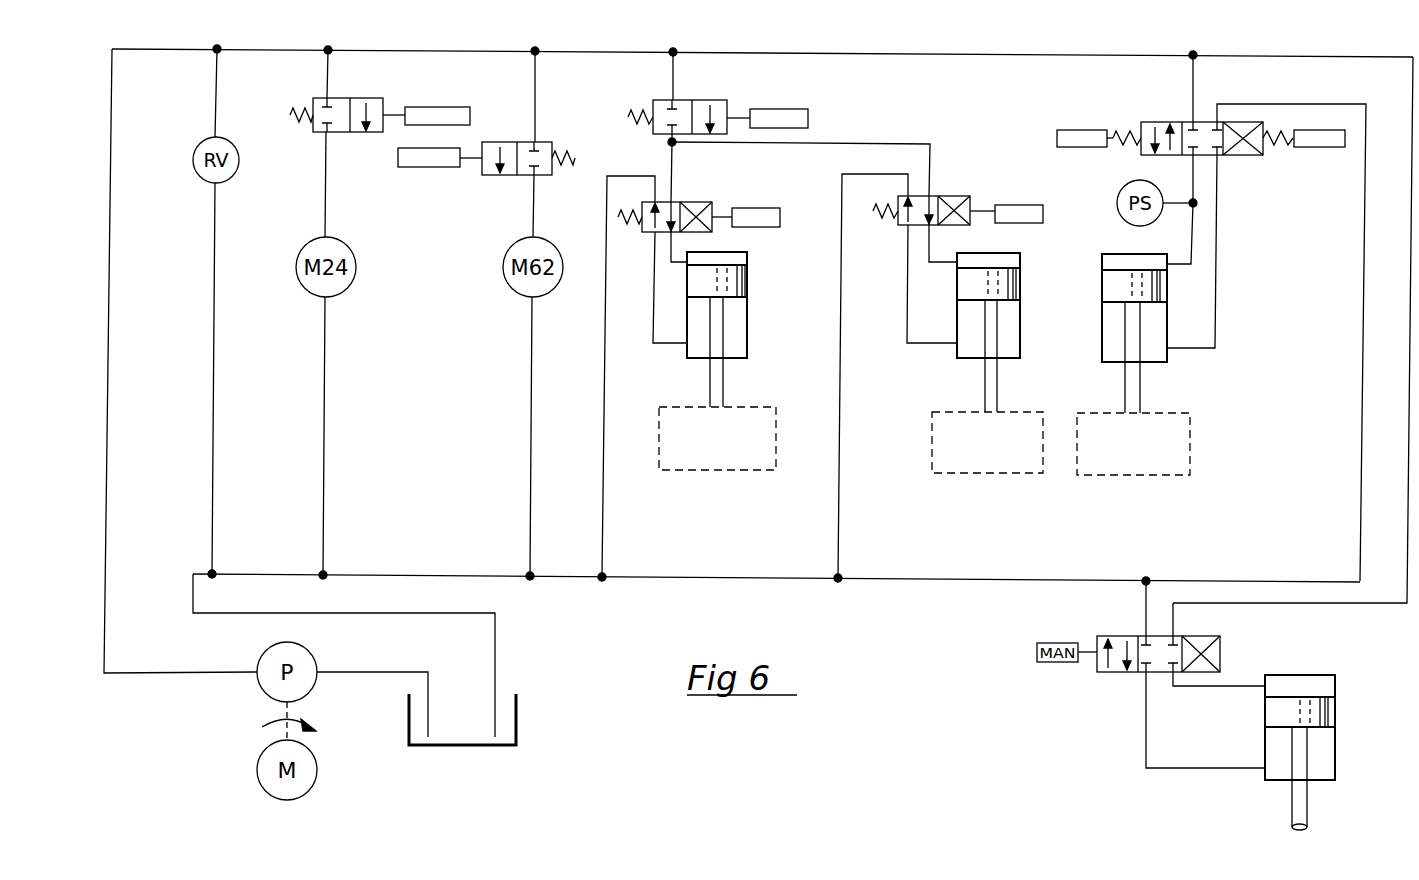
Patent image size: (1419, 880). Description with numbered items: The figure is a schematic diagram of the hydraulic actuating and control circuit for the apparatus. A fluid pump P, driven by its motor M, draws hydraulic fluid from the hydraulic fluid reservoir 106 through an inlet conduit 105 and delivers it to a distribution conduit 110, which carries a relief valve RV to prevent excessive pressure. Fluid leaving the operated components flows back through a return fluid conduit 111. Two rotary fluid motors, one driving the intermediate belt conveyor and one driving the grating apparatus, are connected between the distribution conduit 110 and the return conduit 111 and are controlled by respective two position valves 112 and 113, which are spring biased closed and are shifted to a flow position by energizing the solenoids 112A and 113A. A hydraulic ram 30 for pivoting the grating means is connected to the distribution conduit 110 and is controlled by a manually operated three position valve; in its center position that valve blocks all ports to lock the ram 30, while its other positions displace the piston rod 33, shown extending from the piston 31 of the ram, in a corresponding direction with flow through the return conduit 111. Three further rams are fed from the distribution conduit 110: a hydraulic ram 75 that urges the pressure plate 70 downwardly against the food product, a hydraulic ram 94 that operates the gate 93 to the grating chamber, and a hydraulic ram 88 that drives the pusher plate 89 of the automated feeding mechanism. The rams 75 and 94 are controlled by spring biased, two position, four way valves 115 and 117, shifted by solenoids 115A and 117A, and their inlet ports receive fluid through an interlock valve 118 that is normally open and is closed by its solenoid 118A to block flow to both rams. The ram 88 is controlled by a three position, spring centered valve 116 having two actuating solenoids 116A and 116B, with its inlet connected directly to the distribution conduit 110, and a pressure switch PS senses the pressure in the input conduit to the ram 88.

The distribution conduit 110 is at (913, 48).
The return fluid conduit 111 is at (768, 584).
The inlet conduit 105 is at (104, 399).
The hydraulic fluid reservoir 106 is at (503, 700).
The valve 112 is at (358, 97).
The solenoid 112A is at (430, 106).
The valve 113 is at (540, 143).
The solenoid 113A is at (447, 169).
The interlock valve 118 is at (703, 99).
The solenoid 118A is at (773, 108).
The valve 115 is at (688, 201).
The solenoid 115A is at (755, 207).
The valve 117 is at (953, 195).
The solenoid 117A is at (1020, 204).
The valve 116 is at (1162, 121).
The actuating solenoid 116A is at (1089, 129).
The actuating solenoid 116B is at (1332, 148).
The hydraulic ram 75 is at (748, 302).
The pressure plate 70 is at (718, 471).
The hydraulic ram 94 is at (1022, 305).
The gate 93 is at (985, 474).
The hydraulic ram 88 is at (1100, 316).
The pusher plate 89 is at (1130, 476).
The hydraulic ram 30 is at (1339, 752).
The piston of cylinder 30 31 is at (1340, 699).
The piston rod 33 is at (1308, 810).